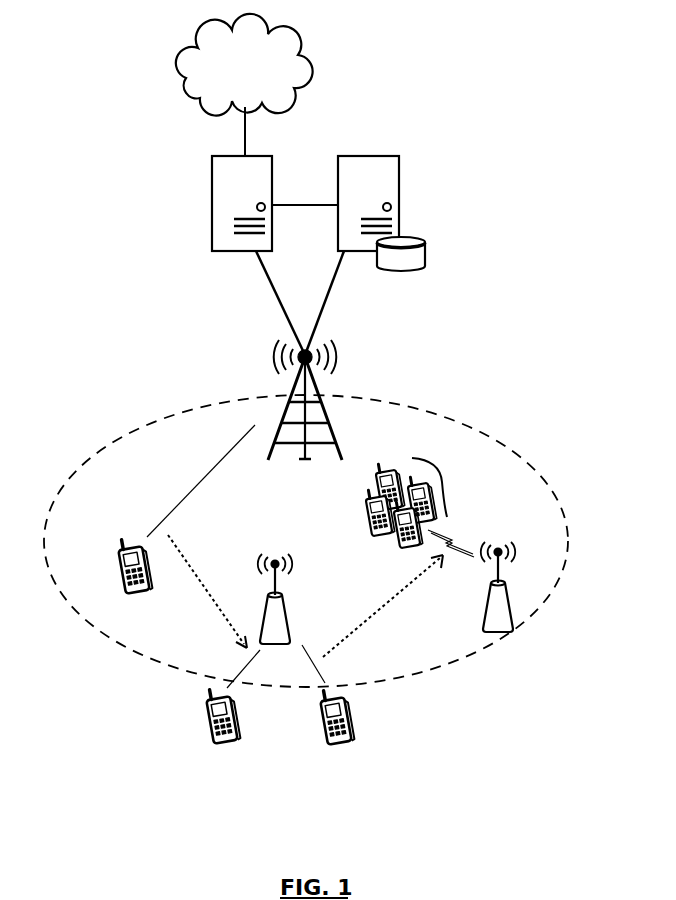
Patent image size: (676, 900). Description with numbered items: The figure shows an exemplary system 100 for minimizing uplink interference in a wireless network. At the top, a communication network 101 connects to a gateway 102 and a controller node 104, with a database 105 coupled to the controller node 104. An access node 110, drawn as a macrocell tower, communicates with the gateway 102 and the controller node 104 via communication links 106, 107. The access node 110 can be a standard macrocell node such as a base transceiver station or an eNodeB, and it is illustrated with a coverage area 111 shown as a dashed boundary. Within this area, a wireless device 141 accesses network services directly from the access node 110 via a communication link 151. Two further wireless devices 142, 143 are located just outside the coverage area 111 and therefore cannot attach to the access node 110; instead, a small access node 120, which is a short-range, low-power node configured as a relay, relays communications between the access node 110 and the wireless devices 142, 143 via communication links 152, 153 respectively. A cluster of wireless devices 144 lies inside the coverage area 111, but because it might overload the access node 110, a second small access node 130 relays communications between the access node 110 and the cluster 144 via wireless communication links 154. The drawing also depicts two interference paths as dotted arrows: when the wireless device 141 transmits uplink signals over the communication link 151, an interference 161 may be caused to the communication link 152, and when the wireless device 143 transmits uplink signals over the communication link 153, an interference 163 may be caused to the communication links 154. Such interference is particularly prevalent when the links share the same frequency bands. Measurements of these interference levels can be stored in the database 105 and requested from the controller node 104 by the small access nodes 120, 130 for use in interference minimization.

The system 100 is at (366, 68).
The communication network 101 is at (264, 78).
The gateway 102 is at (212, 176).
The controller node 104 is at (399, 176).
The database 105 is at (424, 240).
The communication link 106 is at (272, 285).
The communication link 107 is at (334, 285).
The access node 110 is at (324, 430).
The coverage area 111 is at (446, 412).
The small access node 120 is at (285, 590).
The small access node 130 is at (506, 585).
The wireless device 141 is at (122, 583).
The wireless device 142 is at (213, 745).
The wireless device 143 is at (344, 745).
The cluster of wireless devices 144 is at (443, 480).
The communication link 151 is at (204, 491).
The communication link 152 is at (239, 676).
The communication link 153 is at (320, 679).
The wireless communication links 154 is at (450, 528).
The interference 161 is at (207, 591).
The interference 163 is at (383, 606).